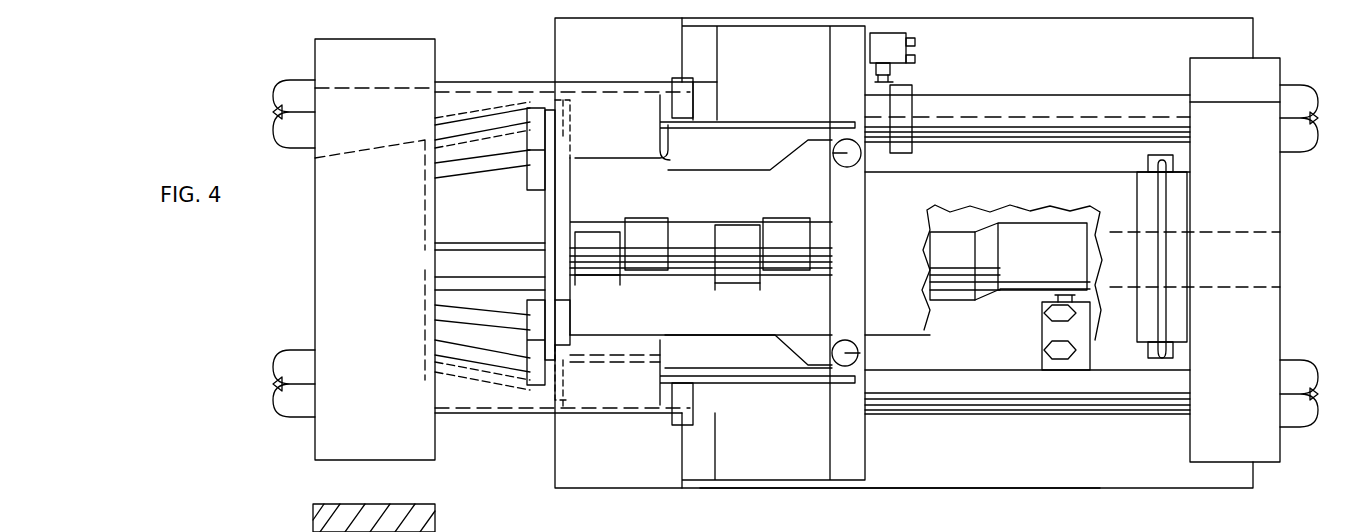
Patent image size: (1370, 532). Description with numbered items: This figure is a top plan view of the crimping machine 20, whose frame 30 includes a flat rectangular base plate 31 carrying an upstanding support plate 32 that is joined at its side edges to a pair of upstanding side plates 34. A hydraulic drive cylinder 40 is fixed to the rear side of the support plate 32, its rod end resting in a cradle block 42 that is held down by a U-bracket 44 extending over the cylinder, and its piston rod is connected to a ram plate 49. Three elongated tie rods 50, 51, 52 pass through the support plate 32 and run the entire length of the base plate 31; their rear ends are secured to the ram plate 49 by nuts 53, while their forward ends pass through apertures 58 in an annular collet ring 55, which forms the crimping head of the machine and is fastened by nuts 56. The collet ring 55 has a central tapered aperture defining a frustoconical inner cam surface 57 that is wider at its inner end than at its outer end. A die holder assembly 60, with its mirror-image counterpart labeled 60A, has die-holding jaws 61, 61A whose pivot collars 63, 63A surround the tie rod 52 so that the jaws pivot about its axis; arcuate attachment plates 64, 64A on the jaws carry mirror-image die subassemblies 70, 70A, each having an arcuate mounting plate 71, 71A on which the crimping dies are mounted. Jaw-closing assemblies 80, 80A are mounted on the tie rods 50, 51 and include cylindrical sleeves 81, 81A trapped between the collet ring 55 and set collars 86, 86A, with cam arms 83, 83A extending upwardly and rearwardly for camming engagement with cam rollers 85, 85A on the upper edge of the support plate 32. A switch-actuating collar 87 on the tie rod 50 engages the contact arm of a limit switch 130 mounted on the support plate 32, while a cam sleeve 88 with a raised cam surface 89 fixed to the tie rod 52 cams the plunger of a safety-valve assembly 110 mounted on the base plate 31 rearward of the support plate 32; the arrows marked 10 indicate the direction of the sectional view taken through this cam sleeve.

The crimping machine 20 is at (282, 36).
The frame 30 is at (1166, 498).
The base plate 31 is at (1093, 489).
The support plate 32 is at (865, 315).
The side plates 34 is at (775, 30).
The hydraulic drive cylinder 40 is at (990, 185).
The cradle block 42 is at (1148, 163).
The U-bracket 44 is at (1165, 212).
The ram plate 49 is at (1195, 428).
The tie rod 50 is at (1113, 95).
The tie rod 51 is at (982, 415).
The tie rod 52 is at (694, 262).
The nuts 53 is at (1300, 140).
The collet ring 55 is at (330, 430).
The nuts 56 is at (287, 139).
The inner cam surface 57 is at (385, 180).
The apertures 58 is at (388, 92).
The die holder assembly 60 is at (840, 192).
The lower toggle housing 60A is at (841, 285).
The die-holding jaw 61 is at (832, 225).
The die-holding jaw 61A is at (640, 352).
The pivot collar 63 is at (612, 238).
The pivot collars 63A is at (652, 262).
The attachment plate 64 is at (563, 98).
The attachment plate 64A is at (567, 400).
The die subassembly 70 is at (419, 228).
The die subassembly 70A is at (420, 318).
The mounting plate 71 is at (540, 100).
The mounting plate 71A is at (555, 340).
The jaw-closing assembly 80 is at (655, 71).
The jaw-closing assembly 80A is at (661, 415).
The sleeve 81 is at (493, 81).
The sleeve 81A is at (500, 414).
The cam arm 83 is at (726, 170).
The cam arm 83A is at (755, 345).
The cam roller 85 is at (835, 160).
The cam roller 85A is at (858, 353).
The set collar 86 is at (680, 78).
The set collar 86A is at (688, 408).
The switch-actuating collar 87 is at (905, 126).
The cam sleeve 88 is at (995, 303).
The raised cam surface 89 is at (1075, 235).
The direction of movement 10 is at (965, 288).
The safety-valve assembly 110 is at (1036, 348).
The limit switch 130 is at (890, 52).